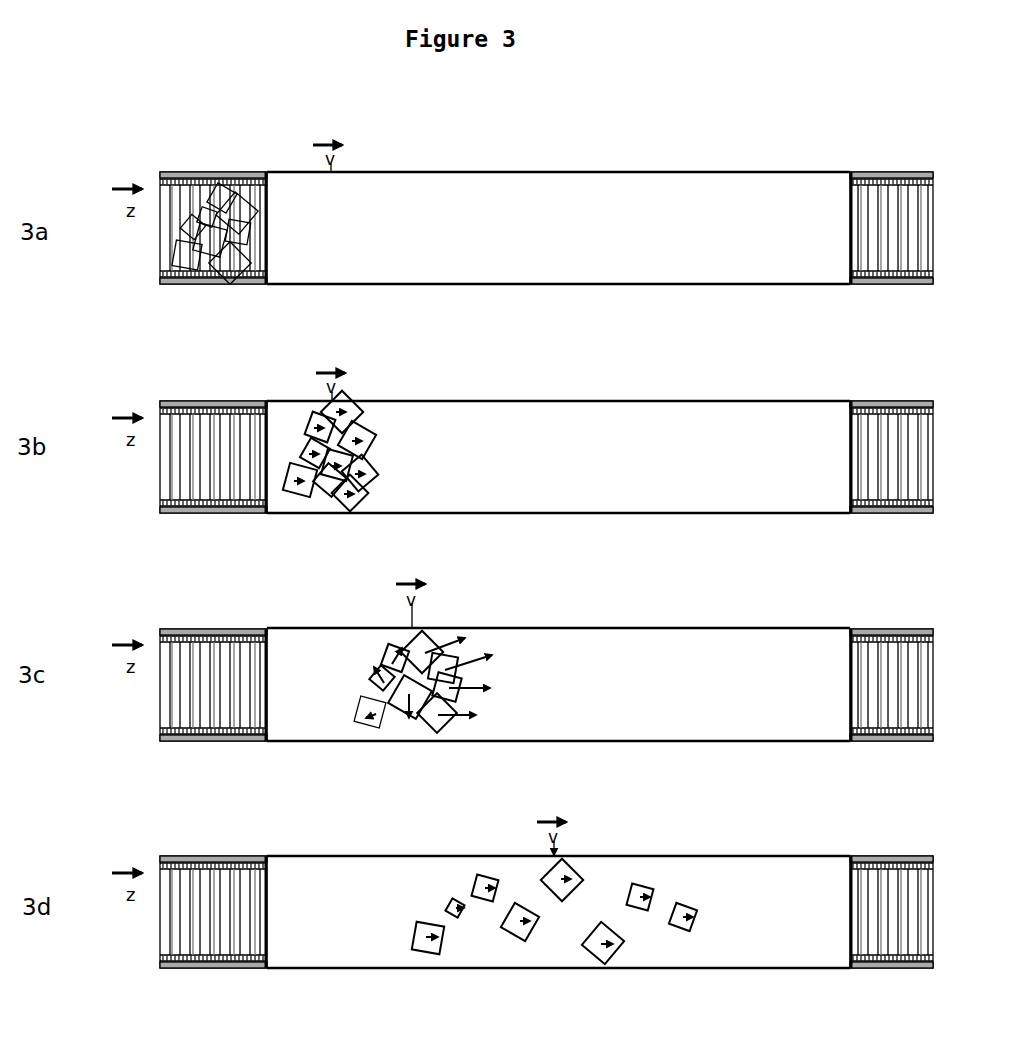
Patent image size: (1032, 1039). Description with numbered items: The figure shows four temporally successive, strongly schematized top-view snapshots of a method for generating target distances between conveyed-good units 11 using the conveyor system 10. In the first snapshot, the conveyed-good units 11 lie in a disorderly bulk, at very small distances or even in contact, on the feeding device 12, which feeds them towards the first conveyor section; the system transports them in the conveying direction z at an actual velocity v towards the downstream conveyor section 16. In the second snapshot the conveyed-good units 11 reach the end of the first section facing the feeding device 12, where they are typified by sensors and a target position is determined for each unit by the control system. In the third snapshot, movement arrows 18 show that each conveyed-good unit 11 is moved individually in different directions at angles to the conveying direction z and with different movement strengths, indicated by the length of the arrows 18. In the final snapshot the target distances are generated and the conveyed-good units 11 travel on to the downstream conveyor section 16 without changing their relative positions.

The conveyor system 10 is at (558, 301).
The conveyed-good units 11 is at (200, 200).
The feeding device 12 is at (218, 301).
The downstream conveyor section 16 is at (891, 306).
The movement arrows 18 is at (375, 728).